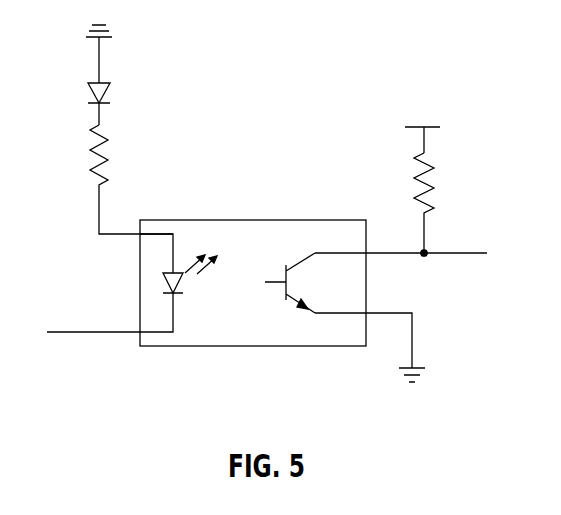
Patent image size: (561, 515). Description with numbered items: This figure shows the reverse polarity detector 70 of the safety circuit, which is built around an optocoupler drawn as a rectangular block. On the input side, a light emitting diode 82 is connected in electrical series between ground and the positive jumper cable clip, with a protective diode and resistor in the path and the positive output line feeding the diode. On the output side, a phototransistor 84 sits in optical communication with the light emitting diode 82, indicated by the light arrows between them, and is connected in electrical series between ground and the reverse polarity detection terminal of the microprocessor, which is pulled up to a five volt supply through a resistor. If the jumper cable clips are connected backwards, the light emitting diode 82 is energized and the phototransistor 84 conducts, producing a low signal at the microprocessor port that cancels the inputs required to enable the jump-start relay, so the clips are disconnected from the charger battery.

The reverse polarity detector 70 is at (265, 203).
The light emitting diode 82 is at (143, 210).
The phototransistor 84 is at (318, 212).